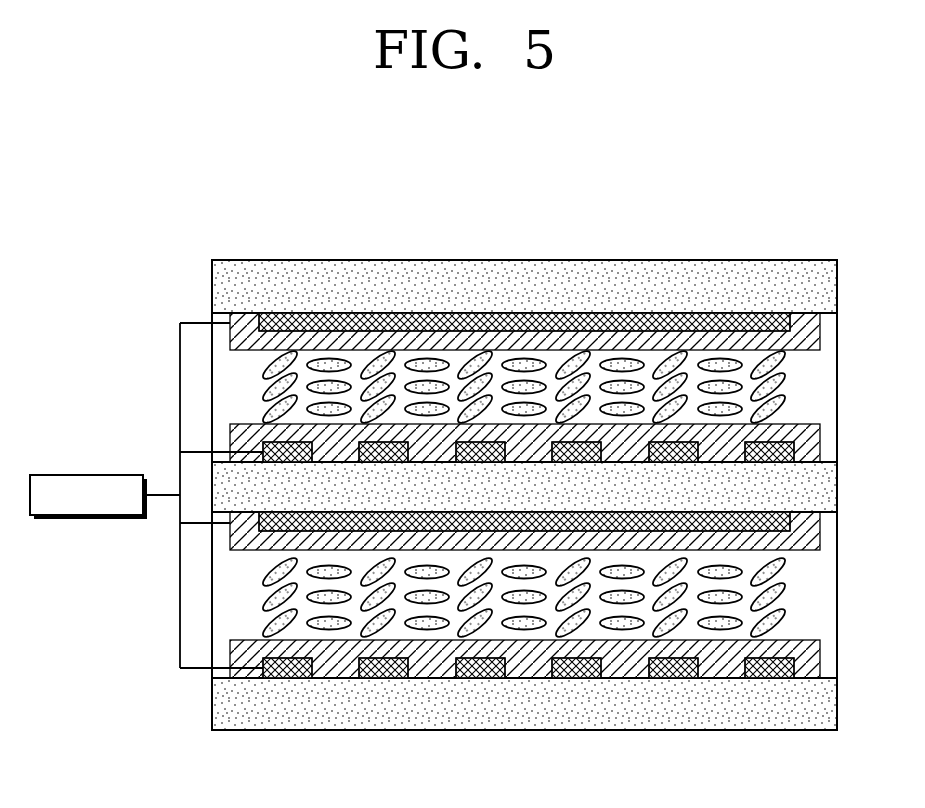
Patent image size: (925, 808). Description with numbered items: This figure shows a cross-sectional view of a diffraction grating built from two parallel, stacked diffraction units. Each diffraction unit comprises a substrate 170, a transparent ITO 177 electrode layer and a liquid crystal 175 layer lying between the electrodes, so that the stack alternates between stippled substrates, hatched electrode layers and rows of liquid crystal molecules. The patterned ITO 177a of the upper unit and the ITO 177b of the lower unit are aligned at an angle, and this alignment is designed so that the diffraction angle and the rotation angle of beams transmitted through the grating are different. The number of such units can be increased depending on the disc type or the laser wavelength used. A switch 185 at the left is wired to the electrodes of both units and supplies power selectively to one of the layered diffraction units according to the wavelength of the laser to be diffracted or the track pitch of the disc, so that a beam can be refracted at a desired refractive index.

The substrate 170 is at (490, 262).
The ITO 177 is at (600, 312).
The liquid crystal 175 is at (713, 360).
The ITO 177a is at (266, 444).
The ITO 177b is at (278, 680).
The switch 185 is at (86, 474).